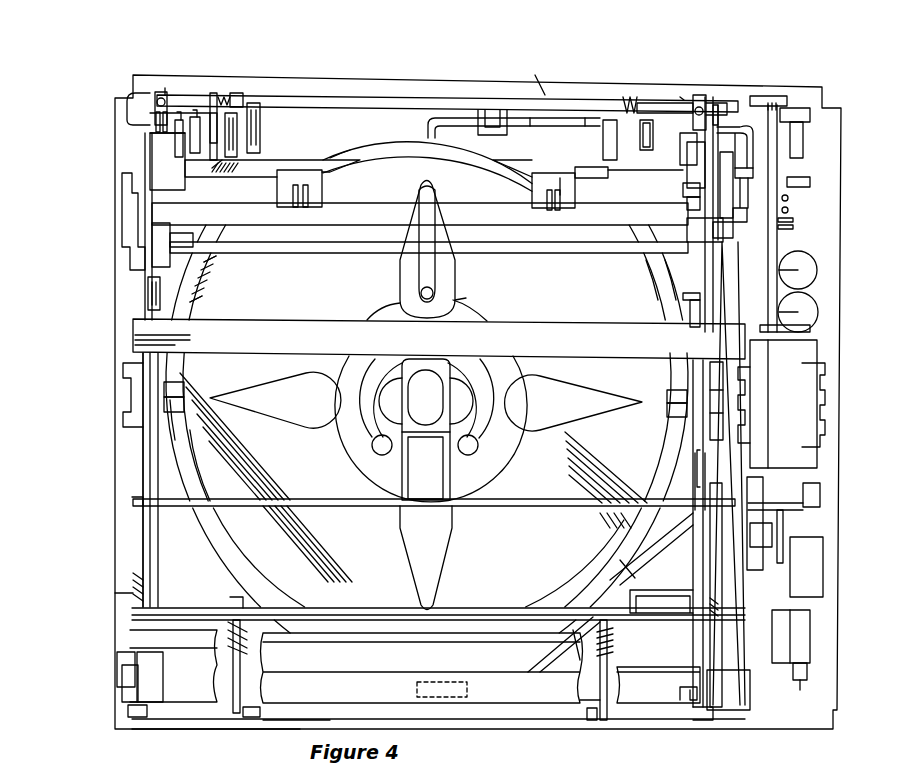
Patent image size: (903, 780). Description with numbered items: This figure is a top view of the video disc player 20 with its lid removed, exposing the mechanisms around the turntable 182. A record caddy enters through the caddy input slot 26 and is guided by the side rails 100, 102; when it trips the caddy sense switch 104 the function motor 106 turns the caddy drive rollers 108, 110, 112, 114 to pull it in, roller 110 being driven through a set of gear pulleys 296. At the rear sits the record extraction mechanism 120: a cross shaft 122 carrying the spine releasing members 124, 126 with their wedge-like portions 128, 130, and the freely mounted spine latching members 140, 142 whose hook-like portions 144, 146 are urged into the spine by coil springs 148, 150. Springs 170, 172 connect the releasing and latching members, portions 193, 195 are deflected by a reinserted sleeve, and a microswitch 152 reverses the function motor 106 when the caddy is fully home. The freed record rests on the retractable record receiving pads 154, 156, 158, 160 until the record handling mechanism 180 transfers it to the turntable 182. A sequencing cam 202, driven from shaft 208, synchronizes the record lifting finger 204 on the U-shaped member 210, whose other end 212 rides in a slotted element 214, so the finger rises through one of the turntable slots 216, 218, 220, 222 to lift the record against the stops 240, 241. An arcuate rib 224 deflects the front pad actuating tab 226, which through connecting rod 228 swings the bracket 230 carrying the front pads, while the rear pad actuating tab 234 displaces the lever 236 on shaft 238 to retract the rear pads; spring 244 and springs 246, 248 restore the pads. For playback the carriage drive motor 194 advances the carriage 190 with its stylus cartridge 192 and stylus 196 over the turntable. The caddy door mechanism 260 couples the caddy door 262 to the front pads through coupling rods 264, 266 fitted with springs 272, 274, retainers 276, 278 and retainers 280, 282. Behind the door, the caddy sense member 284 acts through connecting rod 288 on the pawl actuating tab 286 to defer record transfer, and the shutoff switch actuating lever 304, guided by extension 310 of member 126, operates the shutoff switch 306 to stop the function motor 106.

The video disc player 20 is at (886, 360).
The caddy input slot 26 is at (300, 719).
The side rail 100 is at (160, 567).
The side rail 102 is at (700, 583).
The caddy sense switch 104 is at (150, 288).
The function motor 106 is at (160, 160).
The caddy drive roller 108 is at (214, 272).
The caddy drive roller 110 is at (210, 300).
The caddy drive roller 112 is at (668, 273).
The caddy drive roller 114 is at (660, 297).
The record extraction mechanism 120 is at (548, 86).
The cross shaft 122 is at (360, 98).
The spine releasing member 124 is at (158, 95).
The spine releasing member 126 is at (701, 95).
The wedge-like portion 128 is at (155, 122).
The wedge-like portion 130 is at (631, 97).
The spine latching member 140 is at (213, 97).
The spine latching member 142 is at (646, 118).
The hook-like portion 144 is at (272, 146).
The hook-like portion 146 is at (606, 140).
The coil spring 148 is at (238, 93).
The coil spring 150 is at (600, 100).
The microswitch 152 is at (187, 118).
The record receiving pad 154 is at (250, 605).
The record receiving pad 156 is at (595, 605).
The record receiving pad 158 is at (304, 163).
The record receiving pad 160 is at (535, 175).
The spring 170 is at (165, 95).
The spring 172 is at (684, 98).
The record handling mechanism 180 is at (474, 300).
The turntable 182 is at (198, 428).
The carriage 190 is at (495, 702).
The stylus cartridge 192 is at (460, 685).
The portion 193 is at (128, 100).
The carriage drive motor 194 is at (822, 575).
The portion 195 is at (718, 130).
The stylus 196 is at (417, 686).
The sequencing cam 202 is at (790, 203).
The record lifting finger 204 is at (421, 293).
The shaft 208 is at (300, 250).
The U-shaped member 210 is at (530, 117).
The other end of U-shaped member 212 is at (810, 181).
The slotted element 214 is at (753, 165).
The turntable slot 216 is at (450, 303).
The turntable slot 218 is at (299, 421).
The turntable slot 220 is at (440, 545).
The turntable slot 222 is at (617, 407).
The arcuate rib 224 is at (753, 178).
The front pad actuating tab 226 is at (794, 226).
The connecting rod 228 is at (815, 280).
The bracket 230 is at (360, 610).
The rear pad actuating tab 234 is at (688, 207).
The lever 236 is at (680, 160).
The shaft 238 is at (600, 190).
The stop 240 is at (322, 197).
The stop 241 is at (532, 194).
The spring 244 is at (220, 172).
The spring 246 is at (132, 594).
The spring 248 is at (716, 607).
The caddy door mechanism 260 is at (197, 689).
The caddy door 262 is at (215, 722).
The coupling rod 264 is at (240, 692).
The coupling rod 266 is at (590, 700).
The spring 272 is at (248, 646).
The spring 274 is at (578, 684).
The retainer 276 is at (238, 659).
The retainer 278 is at (620, 680).
The retainer 280 is at (233, 600).
The retainer 282 is at (634, 573).
The caddy sense member 284 is at (682, 700).
The pawl actuating tab 286 is at (730, 232).
The connecting rod 288 is at (750, 330).
The gear pulleys 296 is at (158, 242).
The shutoff switch actuating lever 304 is at (758, 105).
The shutoff switch 306 is at (683, 186).
The extension 310 is at (775, 97).